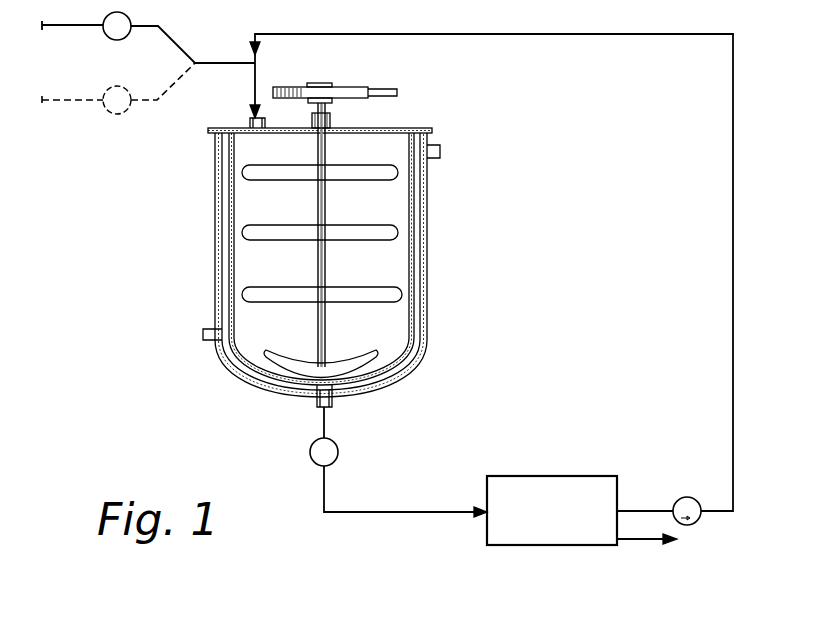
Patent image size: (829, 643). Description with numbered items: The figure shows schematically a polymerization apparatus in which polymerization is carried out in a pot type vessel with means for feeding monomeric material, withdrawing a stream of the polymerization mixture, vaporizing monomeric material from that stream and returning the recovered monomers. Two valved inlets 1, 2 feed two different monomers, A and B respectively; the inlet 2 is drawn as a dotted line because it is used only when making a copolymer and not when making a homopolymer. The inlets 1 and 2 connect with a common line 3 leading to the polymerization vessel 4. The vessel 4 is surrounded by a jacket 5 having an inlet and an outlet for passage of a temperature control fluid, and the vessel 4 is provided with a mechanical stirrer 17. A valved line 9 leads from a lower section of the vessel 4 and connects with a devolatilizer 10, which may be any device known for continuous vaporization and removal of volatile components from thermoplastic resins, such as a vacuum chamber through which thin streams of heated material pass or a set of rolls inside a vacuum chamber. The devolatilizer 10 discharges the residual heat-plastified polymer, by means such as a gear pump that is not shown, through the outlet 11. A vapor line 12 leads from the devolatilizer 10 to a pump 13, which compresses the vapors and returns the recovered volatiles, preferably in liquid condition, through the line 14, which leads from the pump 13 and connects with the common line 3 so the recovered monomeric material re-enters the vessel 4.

The valved inlet 1 is at (74, 25).
The valved inlet 2 is at (175, 38).
The common line 3 is at (214, 67).
The polymerization vessel 4 is at (413, 232).
The jacket 5 is at (428, 264).
The valved line 9 is at (322, 423).
The devolatilizer 10 is at (548, 540).
The outlet 11 is at (633, 546).
The vapor line 12 is at (644, 509).
The pump 13 is at (680, 497).
The line 14 is at (733, 281).
The mechanical stirrer 17 is at (327, 205).